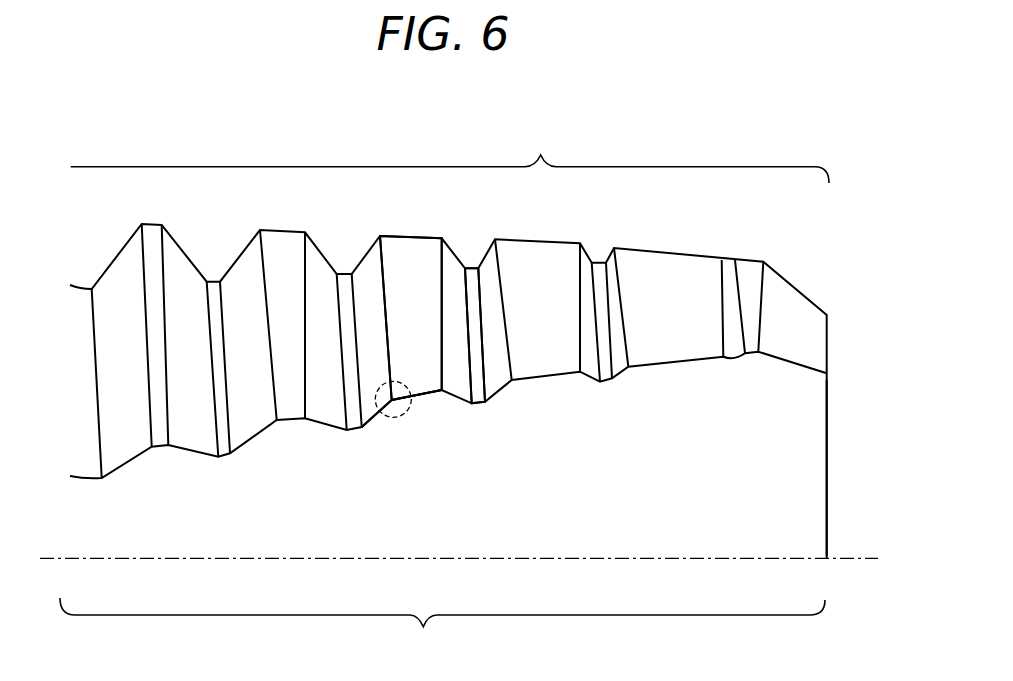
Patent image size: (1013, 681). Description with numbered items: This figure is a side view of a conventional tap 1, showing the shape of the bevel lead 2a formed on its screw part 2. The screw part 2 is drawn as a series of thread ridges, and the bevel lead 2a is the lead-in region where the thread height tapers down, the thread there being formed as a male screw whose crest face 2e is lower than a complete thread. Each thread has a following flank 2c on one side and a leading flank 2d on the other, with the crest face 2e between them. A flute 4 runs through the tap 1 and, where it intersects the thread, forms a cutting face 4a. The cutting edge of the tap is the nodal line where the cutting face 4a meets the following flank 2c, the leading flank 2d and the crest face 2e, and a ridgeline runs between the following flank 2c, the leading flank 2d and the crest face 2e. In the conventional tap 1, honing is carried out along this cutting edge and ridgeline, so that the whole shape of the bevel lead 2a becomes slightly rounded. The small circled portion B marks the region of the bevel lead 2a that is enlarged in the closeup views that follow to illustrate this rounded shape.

The tap 1 is at (837, 418).
The screw part 2 is at (450, 153).
The bevel lead 2a is at (459, 610).
The following flank 2c is at (370, 408).
The leading flank 2d is at (465, 385).
The crest face 2e is at (415, 375).
The flute 4 is at (748, 463).
The cutting face 4a is at (430, 402).
The portion B is at (397, 418).